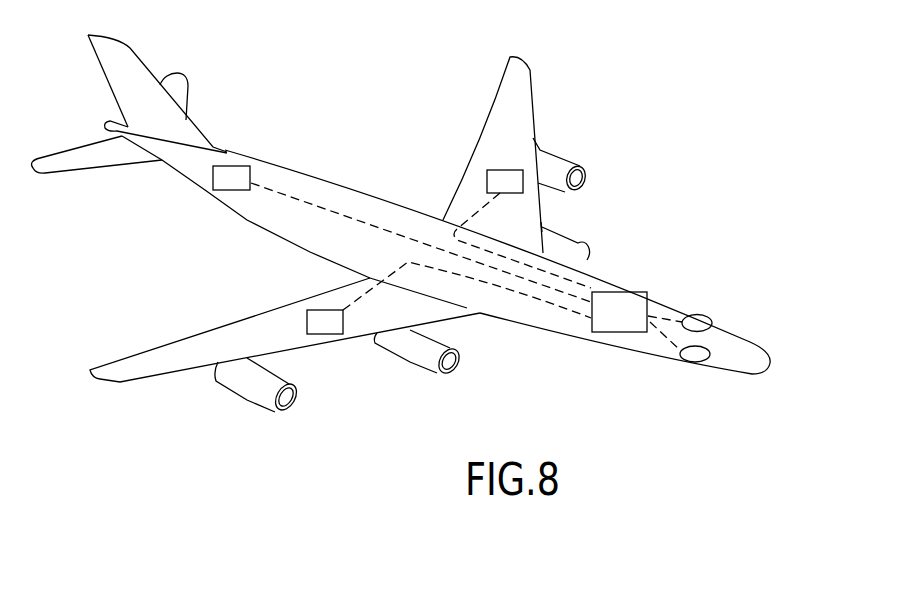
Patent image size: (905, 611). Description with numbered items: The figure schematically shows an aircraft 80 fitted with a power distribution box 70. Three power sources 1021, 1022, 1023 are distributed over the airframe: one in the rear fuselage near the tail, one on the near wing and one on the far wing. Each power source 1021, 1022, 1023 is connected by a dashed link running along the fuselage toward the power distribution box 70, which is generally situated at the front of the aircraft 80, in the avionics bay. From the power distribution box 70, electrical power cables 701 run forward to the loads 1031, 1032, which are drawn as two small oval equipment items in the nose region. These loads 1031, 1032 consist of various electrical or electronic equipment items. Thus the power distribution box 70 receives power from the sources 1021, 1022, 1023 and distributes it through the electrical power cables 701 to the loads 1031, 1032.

The aircraft 80 is at (363, 131).
The power source 1021 is at (230, 184).
The power source 1022 is at (325, 327).
The power source 1023 is at (500, 180).
The power distribution box 70 is at (607, 320).
The electrical power cables 701 is at (675, 322).
The load 1031 is at (707, 320).
The load 1032 is at (697, 355).